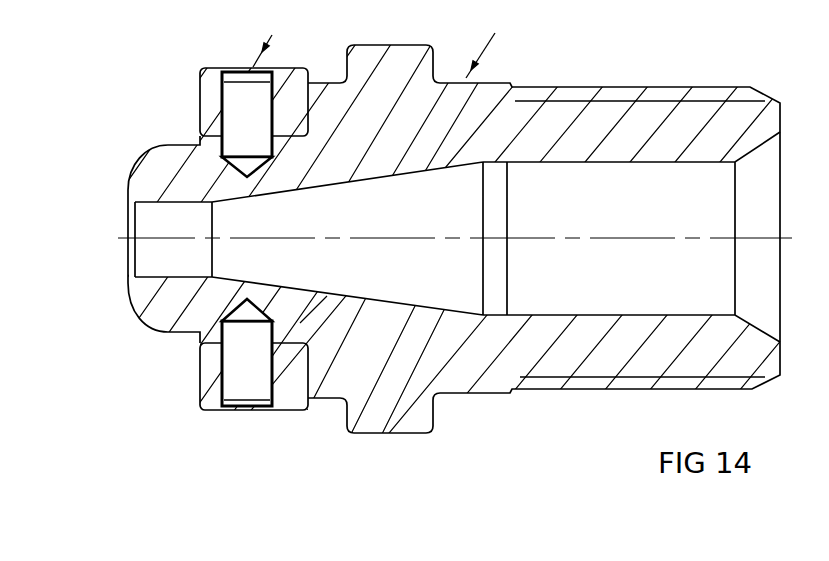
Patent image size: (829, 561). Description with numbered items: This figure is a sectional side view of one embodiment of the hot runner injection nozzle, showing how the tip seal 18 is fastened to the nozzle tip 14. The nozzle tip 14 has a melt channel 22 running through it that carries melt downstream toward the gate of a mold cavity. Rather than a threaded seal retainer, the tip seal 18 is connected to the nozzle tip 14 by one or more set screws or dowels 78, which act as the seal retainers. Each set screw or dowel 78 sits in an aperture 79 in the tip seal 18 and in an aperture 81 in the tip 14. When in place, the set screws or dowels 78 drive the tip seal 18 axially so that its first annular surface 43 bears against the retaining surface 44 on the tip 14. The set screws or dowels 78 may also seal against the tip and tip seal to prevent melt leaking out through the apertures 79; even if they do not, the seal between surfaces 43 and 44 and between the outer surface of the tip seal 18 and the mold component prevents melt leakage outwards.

The nozzle tip 14 is at (522, 362).
The tip seal 18 is at (298, 385).
The melt channel 22 is at (613, 295).
The first annular surface 43 is at (296, 112).
The retaining surface 44 is at (300, 113).
The set screws or dowels 78 is at (163, 249).
The aperture in tip seal 79 is at (242, 372).
The aperture in tip 81 is at (270, 326).